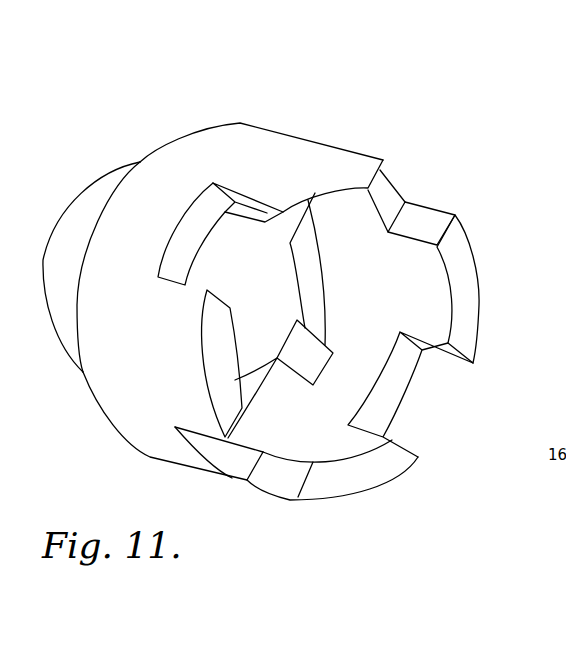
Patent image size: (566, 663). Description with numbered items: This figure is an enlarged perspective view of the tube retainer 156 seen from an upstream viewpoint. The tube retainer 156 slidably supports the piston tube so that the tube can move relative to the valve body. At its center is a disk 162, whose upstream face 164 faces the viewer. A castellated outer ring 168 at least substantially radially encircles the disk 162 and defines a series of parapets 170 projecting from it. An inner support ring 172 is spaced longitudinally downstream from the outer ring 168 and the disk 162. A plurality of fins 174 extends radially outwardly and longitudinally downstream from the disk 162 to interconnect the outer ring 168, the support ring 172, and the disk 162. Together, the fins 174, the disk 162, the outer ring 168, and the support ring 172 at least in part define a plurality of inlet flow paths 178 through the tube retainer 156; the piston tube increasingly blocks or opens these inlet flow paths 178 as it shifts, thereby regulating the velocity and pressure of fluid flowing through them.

The tube retainer 156 is at (360, 88).
The disk 162 is at (277, 283).
The upstream face 164 is at (273, 297).
The castellated outer ring 168 is at (212, 140).
The parapets 170 is at (338, 170).
The inner support ring 172 is at (90, 193).
The fins 174 is at (282, 224).
The inlet flow paths 178 is at (237, 210).